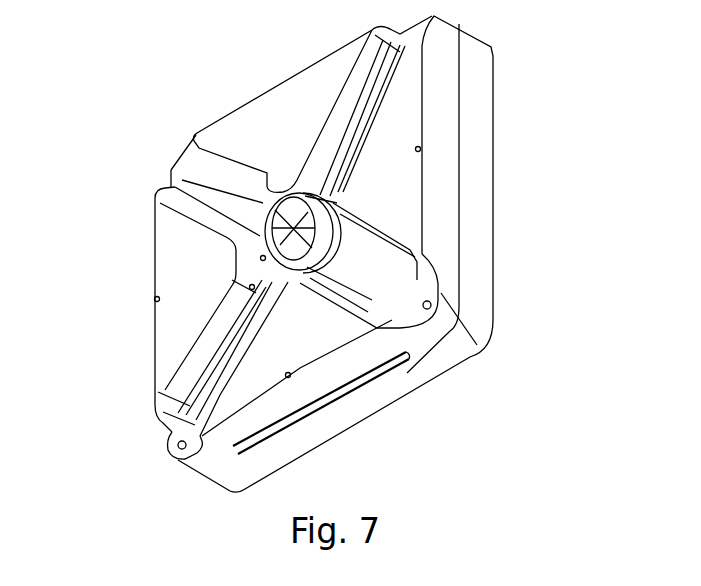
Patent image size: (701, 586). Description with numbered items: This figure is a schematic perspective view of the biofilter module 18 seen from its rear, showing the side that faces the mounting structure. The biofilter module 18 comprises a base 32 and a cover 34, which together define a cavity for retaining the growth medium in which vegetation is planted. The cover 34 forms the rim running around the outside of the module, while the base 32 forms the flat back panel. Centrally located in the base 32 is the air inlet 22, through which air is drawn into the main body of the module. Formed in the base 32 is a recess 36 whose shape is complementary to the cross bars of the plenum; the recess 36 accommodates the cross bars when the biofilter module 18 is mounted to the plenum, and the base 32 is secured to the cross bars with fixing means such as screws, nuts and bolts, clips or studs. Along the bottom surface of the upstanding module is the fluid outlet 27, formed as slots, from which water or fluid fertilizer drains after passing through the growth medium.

The biofilter module 18 is at (134, 350).
The air inlet 22 is at (181, 162).
The fluid outlet 27 is at (366, 376).
The base 32 is at (157, 242).
The cover 34 is at (487, 110).
The recess 36 is at (395, 285).